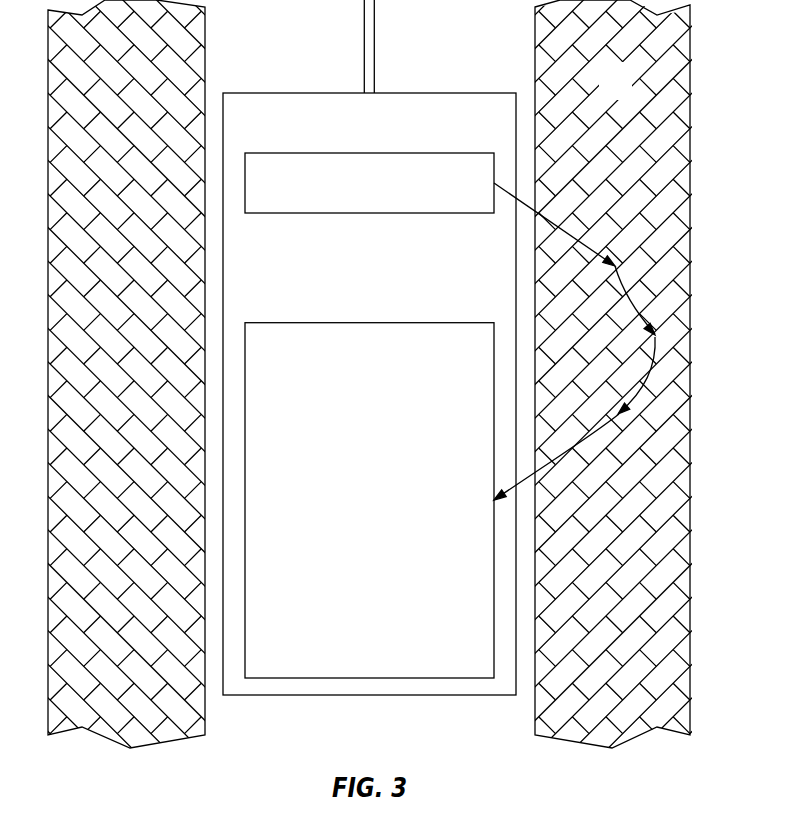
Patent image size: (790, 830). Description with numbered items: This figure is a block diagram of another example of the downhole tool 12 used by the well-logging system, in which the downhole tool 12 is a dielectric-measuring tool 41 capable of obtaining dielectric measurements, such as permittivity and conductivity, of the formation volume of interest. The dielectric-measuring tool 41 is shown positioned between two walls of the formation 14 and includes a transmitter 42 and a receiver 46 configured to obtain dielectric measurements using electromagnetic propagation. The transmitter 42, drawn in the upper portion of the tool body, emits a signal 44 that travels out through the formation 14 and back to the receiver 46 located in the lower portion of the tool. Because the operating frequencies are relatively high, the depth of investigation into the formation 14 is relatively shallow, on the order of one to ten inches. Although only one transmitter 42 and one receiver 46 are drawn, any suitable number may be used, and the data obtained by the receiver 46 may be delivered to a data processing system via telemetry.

The downhole tool 12 is at (369, 347).
The dielectric-measuring tool 41 is at (318, 90).
The formation 14 is at (625, 93).
The transmitter 42 is at (370, 153).
The signal 44 is at (595, 245).
The receiver 46 is at (370, 322).